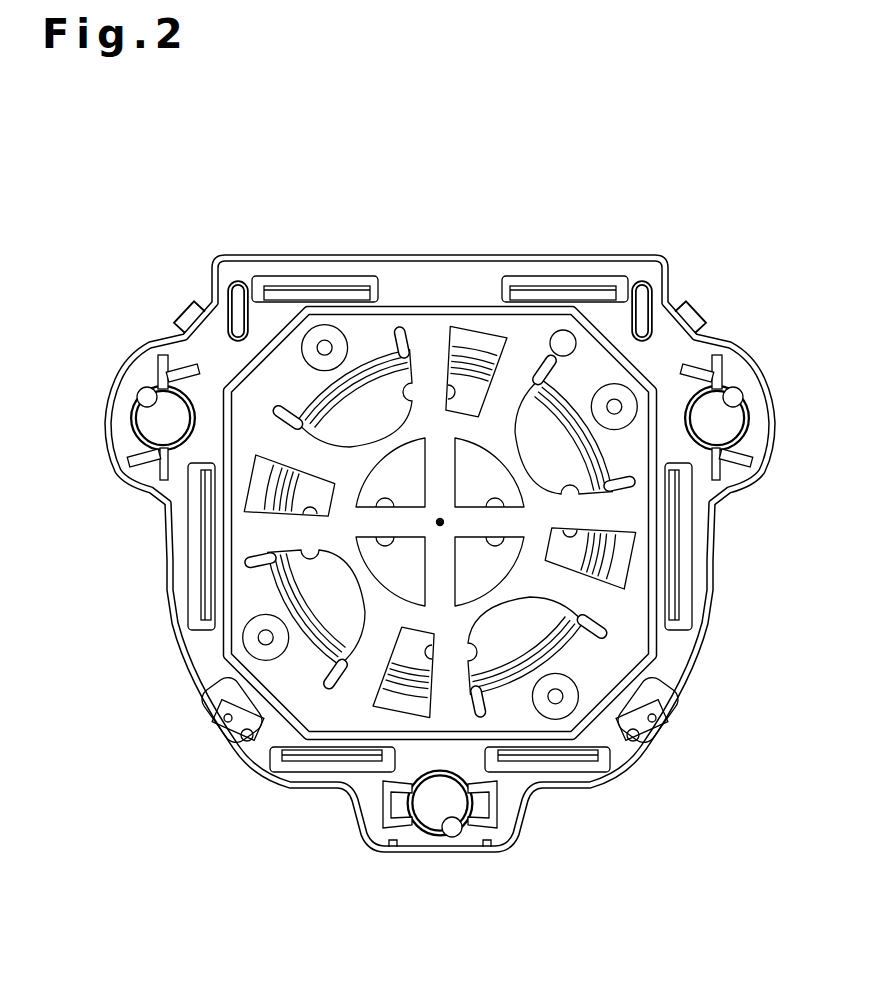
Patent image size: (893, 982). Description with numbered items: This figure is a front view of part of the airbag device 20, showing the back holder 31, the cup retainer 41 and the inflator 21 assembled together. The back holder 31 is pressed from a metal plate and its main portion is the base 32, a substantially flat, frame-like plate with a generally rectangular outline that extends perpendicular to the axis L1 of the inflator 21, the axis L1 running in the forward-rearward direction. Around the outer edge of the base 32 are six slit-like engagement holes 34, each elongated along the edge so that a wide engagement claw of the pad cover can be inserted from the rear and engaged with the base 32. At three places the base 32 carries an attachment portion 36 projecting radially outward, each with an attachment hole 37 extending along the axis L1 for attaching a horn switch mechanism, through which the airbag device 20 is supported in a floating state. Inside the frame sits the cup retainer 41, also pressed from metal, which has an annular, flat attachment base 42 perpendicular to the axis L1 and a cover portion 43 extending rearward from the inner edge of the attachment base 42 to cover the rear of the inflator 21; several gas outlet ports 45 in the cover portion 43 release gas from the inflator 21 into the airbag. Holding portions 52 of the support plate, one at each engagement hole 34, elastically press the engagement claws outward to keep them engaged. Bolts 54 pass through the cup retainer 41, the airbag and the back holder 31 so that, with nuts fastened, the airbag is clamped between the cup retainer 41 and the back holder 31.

The airbag device 20 is at (665, 791).
The inflator 21 is at (531, 633).
The back holder 31 is at (581, 258).
The base 32 is at (478, 262).
The engagement hole 34 is at (318, 280).
The attachment portion 36 is at (116, 398).
The attachment hole 37 is at (140, 390).
The cup retainer 41 is at (452, 300).
The attachment base 42 is at (397, 330).
The cover portion 43 is at (515, 406).
The gas outlet port 45 is at (405, 396).
The holding portion 52 is at (228, 277).
The bolt 54 is at (312, 353).
The axis L1 is at (441, 516).